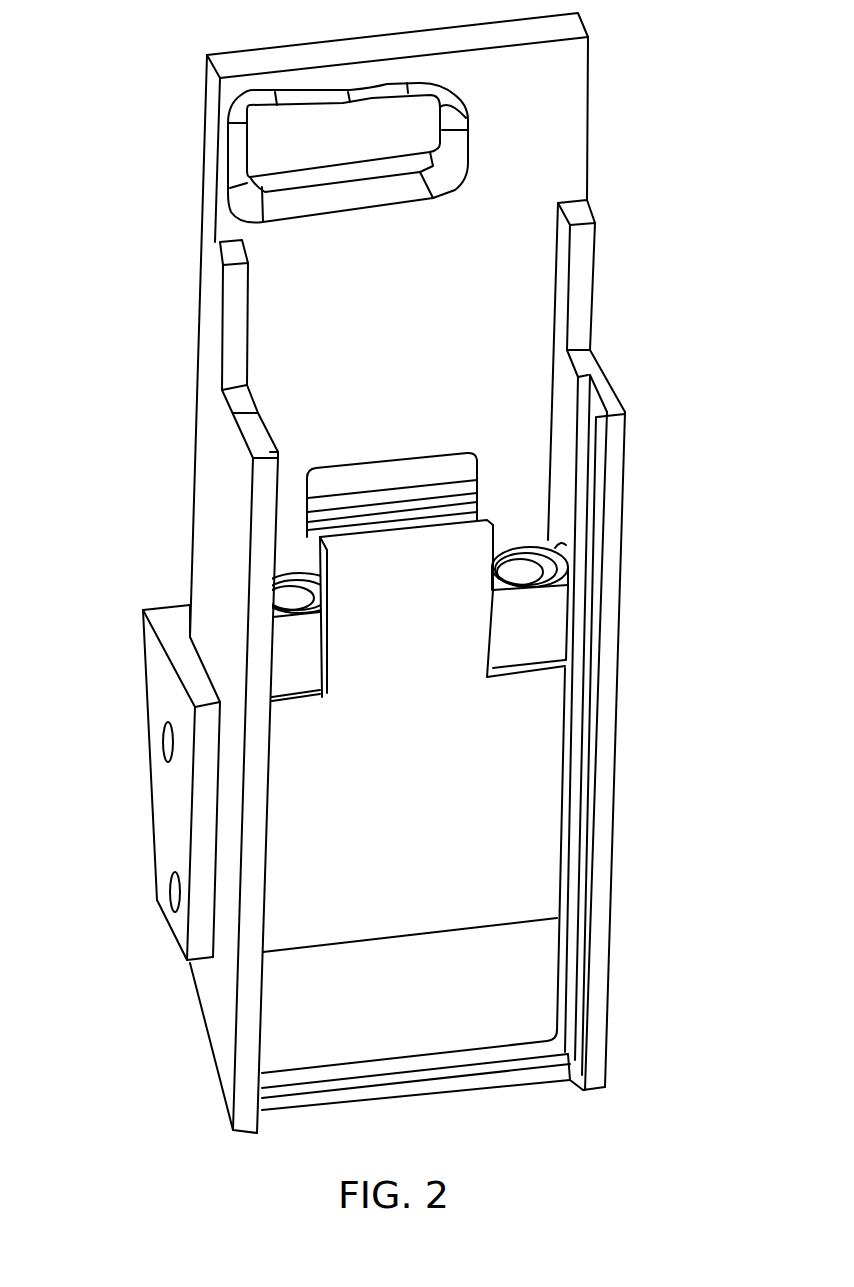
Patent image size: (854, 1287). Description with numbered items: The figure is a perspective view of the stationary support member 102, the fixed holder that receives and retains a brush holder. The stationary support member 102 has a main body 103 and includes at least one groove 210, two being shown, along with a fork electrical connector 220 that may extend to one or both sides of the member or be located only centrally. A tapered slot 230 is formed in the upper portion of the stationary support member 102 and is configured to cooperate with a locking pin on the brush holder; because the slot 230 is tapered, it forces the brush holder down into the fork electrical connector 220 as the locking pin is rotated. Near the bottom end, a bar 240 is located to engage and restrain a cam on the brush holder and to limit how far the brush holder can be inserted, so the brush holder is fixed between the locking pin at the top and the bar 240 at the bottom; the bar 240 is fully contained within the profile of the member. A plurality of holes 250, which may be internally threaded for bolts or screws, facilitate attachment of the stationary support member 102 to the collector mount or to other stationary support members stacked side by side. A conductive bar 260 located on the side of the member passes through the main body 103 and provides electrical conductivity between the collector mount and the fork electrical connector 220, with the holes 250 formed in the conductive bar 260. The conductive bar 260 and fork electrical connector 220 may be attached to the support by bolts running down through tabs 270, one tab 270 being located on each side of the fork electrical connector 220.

The stationary support member 102 is at (618, 95).
The main body 103 is at (506, 373).
The groove 210 is at (258, 413).
The fork electrical connector 220 is at (424, 609).
The tapered slot 230 is at (310, 177).
The bar 240 is at (457, 1092).
The holes 250 is at (168, 743).
The conductive bar 260 is at (153, 668).
The tab 270 is at (295, 670).